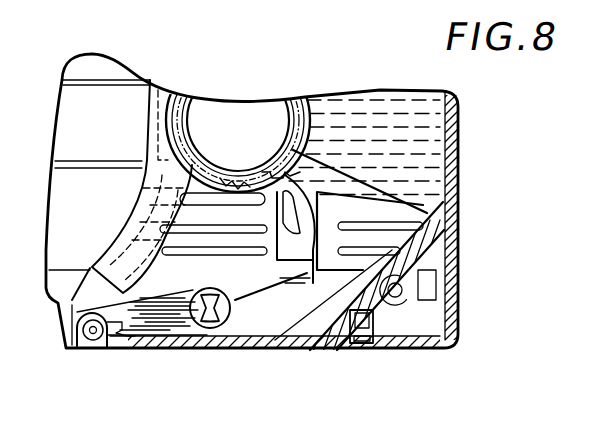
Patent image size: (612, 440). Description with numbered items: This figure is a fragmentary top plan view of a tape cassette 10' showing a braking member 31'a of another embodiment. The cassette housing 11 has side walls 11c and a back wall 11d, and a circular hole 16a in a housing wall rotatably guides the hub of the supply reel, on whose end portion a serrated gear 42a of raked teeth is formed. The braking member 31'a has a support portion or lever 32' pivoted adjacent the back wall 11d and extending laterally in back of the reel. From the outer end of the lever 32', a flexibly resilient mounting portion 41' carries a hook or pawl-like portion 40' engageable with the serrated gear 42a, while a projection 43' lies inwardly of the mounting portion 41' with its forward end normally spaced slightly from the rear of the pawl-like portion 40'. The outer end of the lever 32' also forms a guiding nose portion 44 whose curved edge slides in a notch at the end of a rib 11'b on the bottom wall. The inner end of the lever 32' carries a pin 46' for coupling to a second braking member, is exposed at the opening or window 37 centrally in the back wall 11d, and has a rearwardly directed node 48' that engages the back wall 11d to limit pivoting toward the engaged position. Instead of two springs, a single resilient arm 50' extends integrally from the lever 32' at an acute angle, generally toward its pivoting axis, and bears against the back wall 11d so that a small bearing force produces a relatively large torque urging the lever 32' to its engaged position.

The tape cassette 10' is at (299, 201).
The cassette housing 11 is at (400, 216).
The side wall 11c is at (458, 210).
The back wall 11d is at (241, 348).
The rib 11'b is at (378, 281).
The circular hole 16a is at (200, 104).
The serrated gear 42a is at (240, 177).
The hook or pawl-like portion 40' is at (275, 154).
The flexibly resilient mounting portion 41' is at (324, 172).
The projection 43' is at (291, 246).
The guiding nose portion 44 is at (352, 278).
The braking member 31'a is at (147, 303).
The support portion or lever 32' is at (224, 287).
The pin 46' is at (86, 362).
The opening or window 37 is at (105, 346).
The node 48' is at (167, 362).
The resilient arm 50' is at (333, 321).